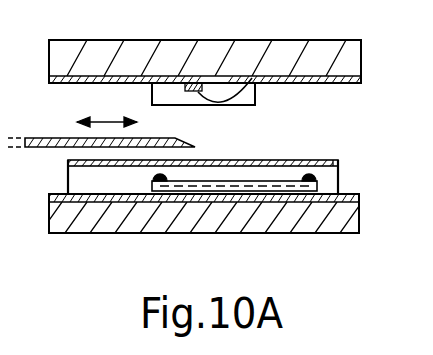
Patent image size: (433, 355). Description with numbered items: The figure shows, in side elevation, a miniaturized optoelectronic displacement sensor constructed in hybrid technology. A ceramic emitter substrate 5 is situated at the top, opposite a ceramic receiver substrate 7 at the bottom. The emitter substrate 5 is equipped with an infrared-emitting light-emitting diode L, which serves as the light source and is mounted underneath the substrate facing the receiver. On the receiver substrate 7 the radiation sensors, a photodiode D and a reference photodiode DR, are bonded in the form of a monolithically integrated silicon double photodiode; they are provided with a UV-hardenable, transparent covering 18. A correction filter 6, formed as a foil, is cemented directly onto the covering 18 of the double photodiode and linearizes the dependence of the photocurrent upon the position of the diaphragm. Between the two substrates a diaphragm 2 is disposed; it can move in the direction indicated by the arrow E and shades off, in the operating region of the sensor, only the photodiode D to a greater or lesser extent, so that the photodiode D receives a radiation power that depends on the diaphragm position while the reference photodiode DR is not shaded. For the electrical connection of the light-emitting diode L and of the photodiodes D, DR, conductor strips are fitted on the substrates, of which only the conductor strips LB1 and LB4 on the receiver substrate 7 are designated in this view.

The ceramic emitter substrate 5 is at (334, 50).
The light-emitting diode L is at (255, 97).
The direction of movement E is at (107, 107).
The diaphragm 2 is at (45, 142).
The transparent covering 18 is at (88, 177).
The correction filter 6 is at (340, 162).
The photodiode D is at (178, 183).
The reference photodiode DR is at (265, 184).
The ceramic receiver substrate 7 is at (342, 210).
The conductor strip LB1 is at (87, 203).
The conductor strip LB4 is at (350, 196).